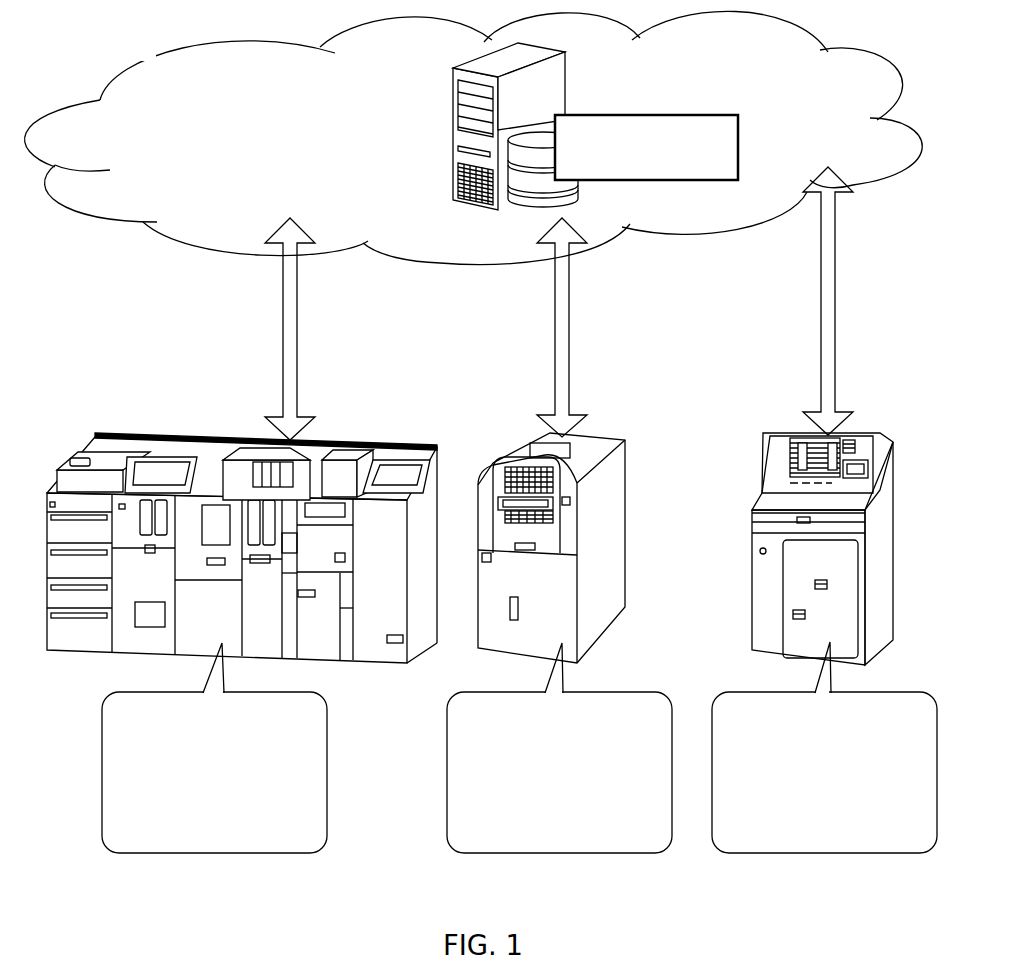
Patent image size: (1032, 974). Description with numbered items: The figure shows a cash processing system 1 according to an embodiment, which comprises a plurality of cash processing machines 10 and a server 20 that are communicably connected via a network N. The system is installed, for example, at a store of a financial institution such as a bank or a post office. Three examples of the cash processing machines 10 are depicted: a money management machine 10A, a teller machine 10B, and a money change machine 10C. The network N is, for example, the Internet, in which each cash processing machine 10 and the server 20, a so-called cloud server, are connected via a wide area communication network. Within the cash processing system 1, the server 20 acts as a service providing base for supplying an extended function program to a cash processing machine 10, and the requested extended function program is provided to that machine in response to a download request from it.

The cash processing system 1 is at (162, 318).
The network N is at (405, 248).
The server 20 is at (565, 85).
The cash processing machine 10 is at (470, 517).
The money management machine 10A is at (133, 430).
The teller machine 10B is at (620, 478).
The money change machine 10C is at (772, 598).